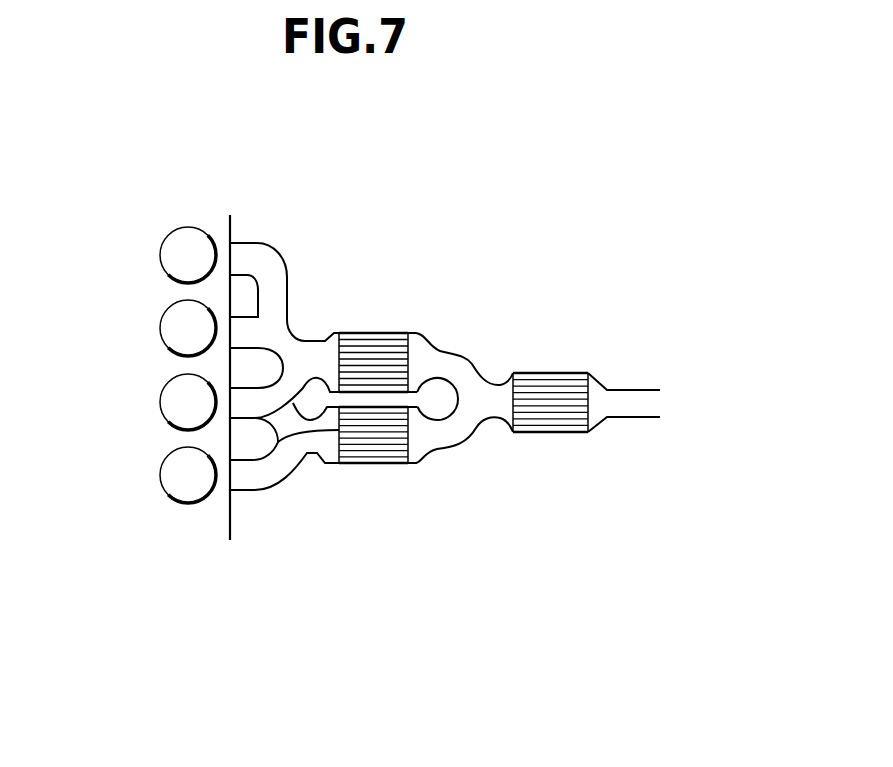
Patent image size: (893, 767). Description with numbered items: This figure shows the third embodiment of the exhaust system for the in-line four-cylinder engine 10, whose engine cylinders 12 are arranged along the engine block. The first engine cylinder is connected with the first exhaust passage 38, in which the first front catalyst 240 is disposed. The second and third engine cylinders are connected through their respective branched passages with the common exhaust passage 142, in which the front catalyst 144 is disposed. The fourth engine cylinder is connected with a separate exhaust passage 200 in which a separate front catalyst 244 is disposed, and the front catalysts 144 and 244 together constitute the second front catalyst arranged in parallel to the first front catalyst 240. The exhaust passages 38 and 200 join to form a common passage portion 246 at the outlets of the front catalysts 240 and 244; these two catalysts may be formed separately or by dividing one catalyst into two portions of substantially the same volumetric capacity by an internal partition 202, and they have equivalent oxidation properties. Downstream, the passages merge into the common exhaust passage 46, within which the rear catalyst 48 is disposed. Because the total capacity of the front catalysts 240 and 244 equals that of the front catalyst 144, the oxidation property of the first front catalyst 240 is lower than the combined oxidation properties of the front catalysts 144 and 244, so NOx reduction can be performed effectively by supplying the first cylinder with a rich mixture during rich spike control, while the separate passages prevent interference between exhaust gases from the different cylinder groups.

The engine 10 is at (215, 222).
The engine cylinder 12 is at (161, 263).
The separate exhaust passage 200 is at (263, 272).
The common exhaust passage 142 is at (297, 343).
The front catalyst 144 is at (371, 334).
The separate front catalyst 244 is at (392, 417).
The common exhaust passage 46 is at (492, 397).
The rear catalyst 48 is at (565, 375).
The first exhaust passage 38 is at (319, 440).
The first front catalyst 240 is at (394, 452).
The internal partition 202 is at (360, 432).
The common passage portion 246 is at (420, 432).